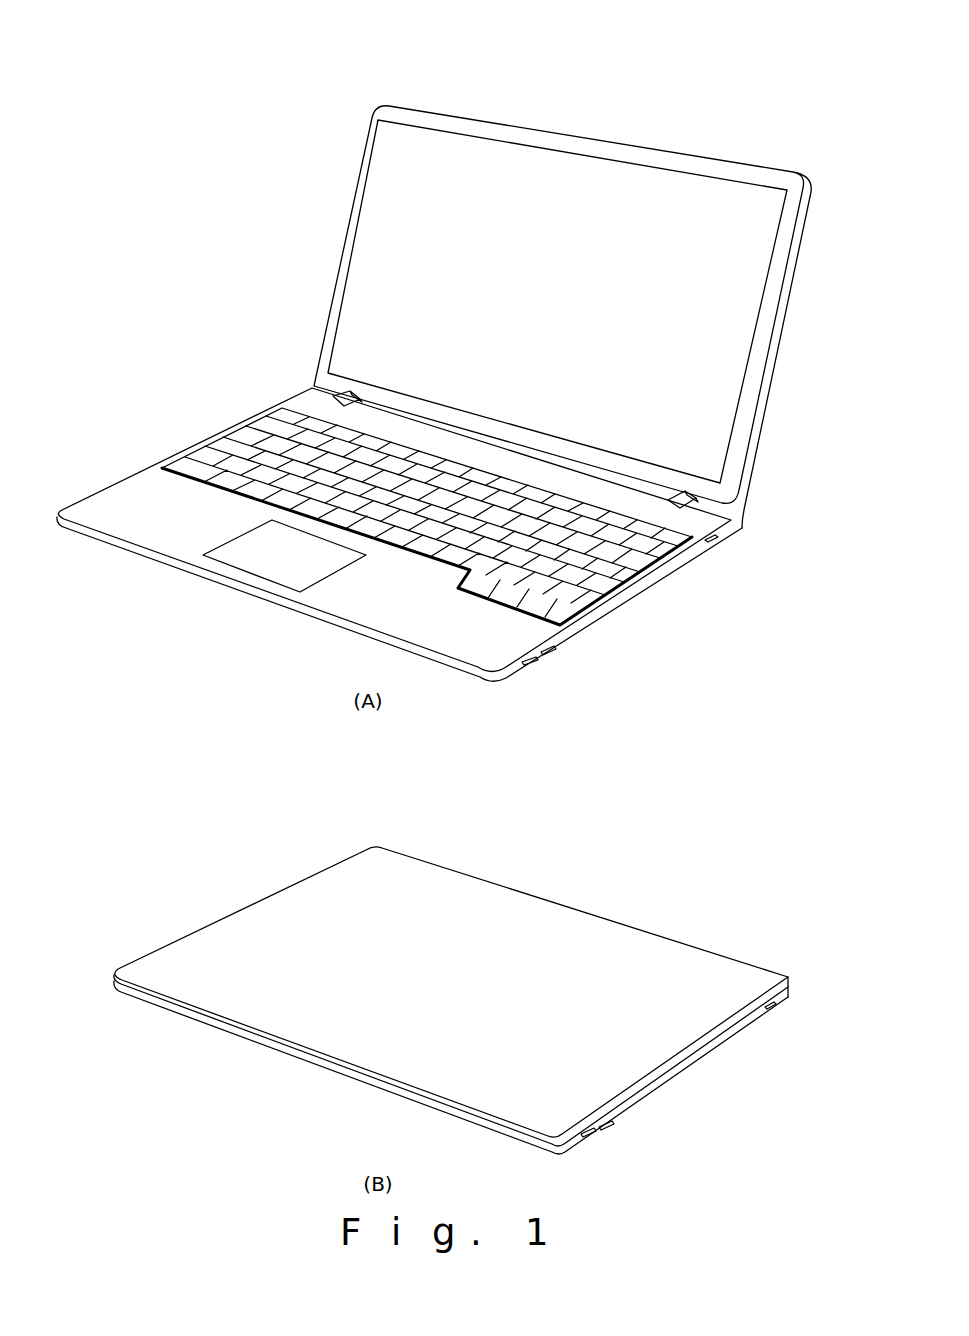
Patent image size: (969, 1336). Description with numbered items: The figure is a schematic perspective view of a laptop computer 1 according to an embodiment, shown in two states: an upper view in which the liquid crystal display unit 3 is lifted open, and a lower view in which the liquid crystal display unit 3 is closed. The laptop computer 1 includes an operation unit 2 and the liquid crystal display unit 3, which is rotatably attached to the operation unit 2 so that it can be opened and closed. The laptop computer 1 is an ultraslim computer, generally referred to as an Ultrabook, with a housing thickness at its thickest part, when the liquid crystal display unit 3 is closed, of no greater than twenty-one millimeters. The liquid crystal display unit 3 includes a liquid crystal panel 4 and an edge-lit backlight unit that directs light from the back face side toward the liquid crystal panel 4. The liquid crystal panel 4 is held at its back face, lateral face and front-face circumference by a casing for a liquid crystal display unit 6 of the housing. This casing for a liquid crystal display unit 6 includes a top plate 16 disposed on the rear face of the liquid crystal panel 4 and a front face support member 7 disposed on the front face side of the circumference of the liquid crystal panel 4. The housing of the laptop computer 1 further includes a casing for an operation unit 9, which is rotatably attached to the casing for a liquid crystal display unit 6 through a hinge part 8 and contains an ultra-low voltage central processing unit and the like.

The laptop computer 1 is at (798, 108).
The operation unit 2 is at (205, 405).
The liquid crystal display unit 3 is at (328, 224).
The liquid crystal panel 4 is at (752, 256).
The casing for a liquid crystal display unit 6 is at (758, 452).
The front face support member 7 is at (753, 385).
The hinge part 8 is at (688, 500).
The casing for an operation unit 9 is at (690, 556).
The top plate 16 is at (775, 344).